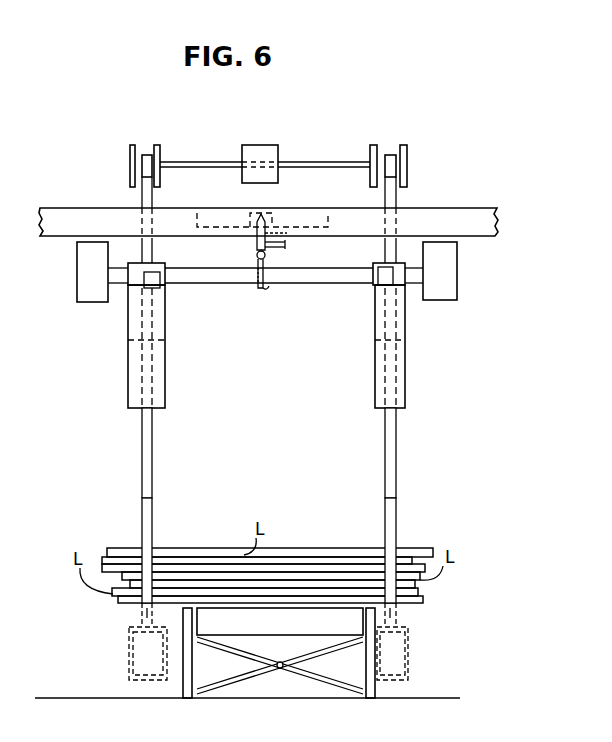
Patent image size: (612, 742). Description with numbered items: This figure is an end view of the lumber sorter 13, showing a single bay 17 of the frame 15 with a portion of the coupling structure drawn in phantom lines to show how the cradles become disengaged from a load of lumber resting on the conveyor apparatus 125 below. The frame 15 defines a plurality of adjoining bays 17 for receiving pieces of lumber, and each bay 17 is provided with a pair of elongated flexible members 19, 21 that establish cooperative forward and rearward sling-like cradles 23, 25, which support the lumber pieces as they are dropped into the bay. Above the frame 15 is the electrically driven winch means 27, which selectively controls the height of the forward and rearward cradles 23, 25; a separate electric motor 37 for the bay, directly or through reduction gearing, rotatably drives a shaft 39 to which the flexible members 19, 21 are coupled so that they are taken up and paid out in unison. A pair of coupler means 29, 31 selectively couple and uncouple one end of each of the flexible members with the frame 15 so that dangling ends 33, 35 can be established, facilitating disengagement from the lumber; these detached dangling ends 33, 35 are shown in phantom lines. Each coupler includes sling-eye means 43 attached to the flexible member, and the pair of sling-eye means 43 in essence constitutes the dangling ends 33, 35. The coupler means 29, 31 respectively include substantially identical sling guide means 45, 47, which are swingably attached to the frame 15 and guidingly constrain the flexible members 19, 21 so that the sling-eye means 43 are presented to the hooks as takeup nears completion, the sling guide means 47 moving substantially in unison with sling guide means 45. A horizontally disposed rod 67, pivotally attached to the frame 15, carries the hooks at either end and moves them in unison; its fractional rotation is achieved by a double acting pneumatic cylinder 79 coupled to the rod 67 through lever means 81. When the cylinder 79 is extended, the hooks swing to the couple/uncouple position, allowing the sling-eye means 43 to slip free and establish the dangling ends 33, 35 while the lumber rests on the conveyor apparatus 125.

The lumber sorter 13 is at (76, 147).
The frame 15 is at (462, 231).
The bay 17 is at (356, 76).
The elongated flexible member 19 is at (148, 452).
The elongated flexible member 21 is at (386, 452).
The forward sling-like cradle 23 is at (142, 532).
The rearward sling-like cradle 25 is at (396, 532).
The winch means 27 is at (405, 153).
The coupler means 29 is at (76, 343).
The coupler means 31 is at (458, 404).
The dangling end 33 is at (143, 613).
The dangling end 35 is at (398, 613).
The electric motor 37 is at (260, 152).
The shaft 39 is at (305, 160).
The sling-eye means 43 is at (131, 665).
The sling guide means 45 is at (158, 365).
The sling guide means 47 is at (402, 361).
The horizontally disposed rod 67 is at (333, 272).
The double acting pneumatic cylinder 79 is at (255, 251).
The lever means 81 is at (262, 290).
The conveyor apparatus 125 is at (278, 628).